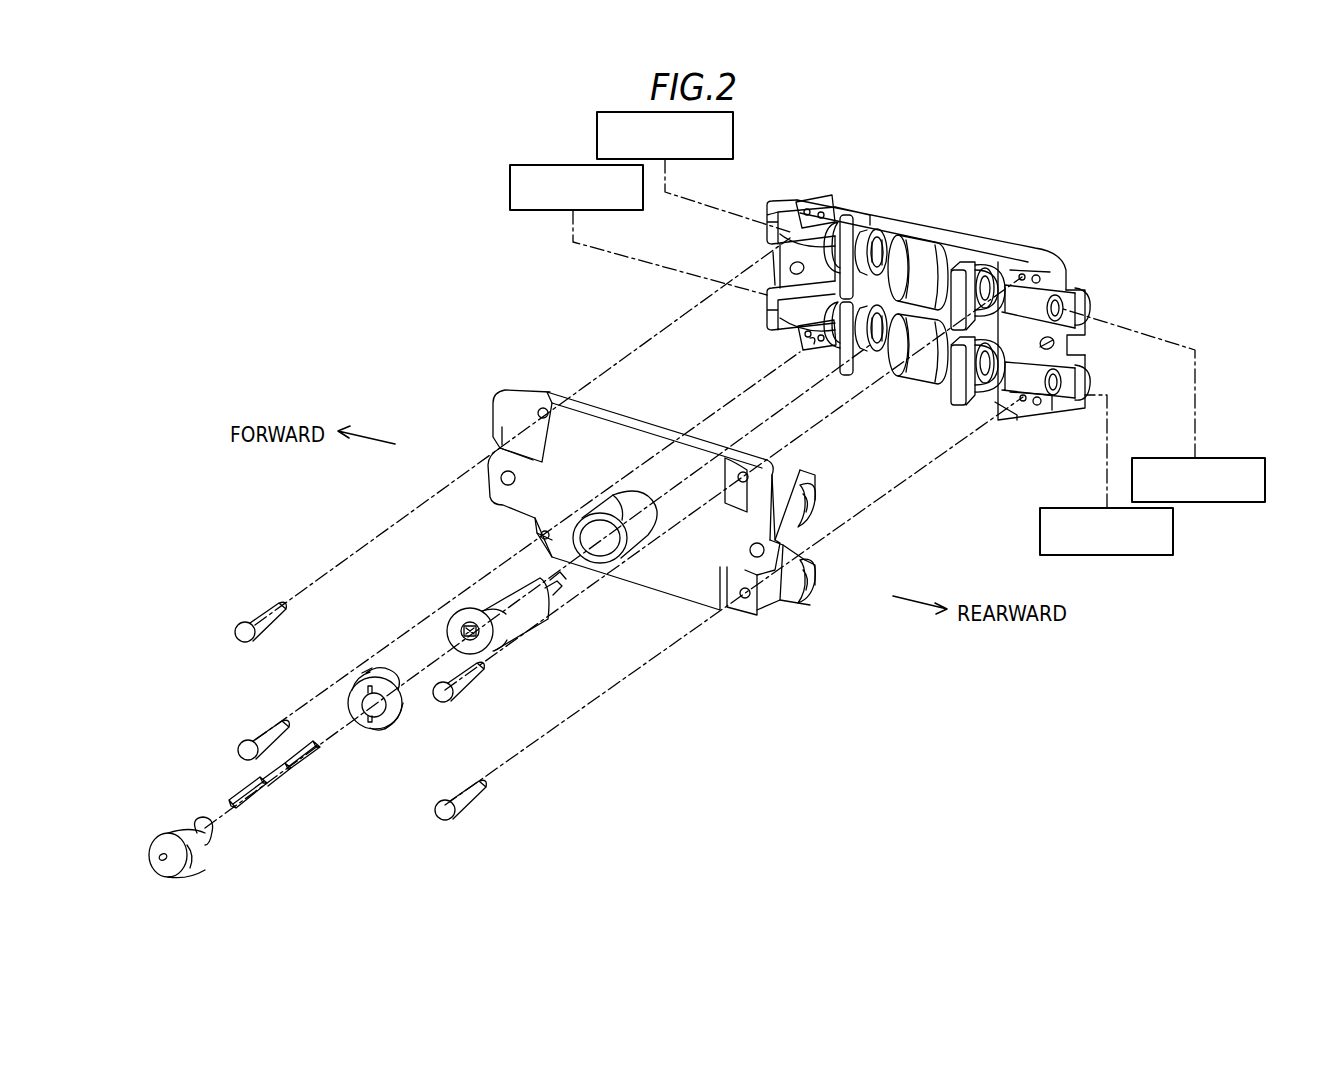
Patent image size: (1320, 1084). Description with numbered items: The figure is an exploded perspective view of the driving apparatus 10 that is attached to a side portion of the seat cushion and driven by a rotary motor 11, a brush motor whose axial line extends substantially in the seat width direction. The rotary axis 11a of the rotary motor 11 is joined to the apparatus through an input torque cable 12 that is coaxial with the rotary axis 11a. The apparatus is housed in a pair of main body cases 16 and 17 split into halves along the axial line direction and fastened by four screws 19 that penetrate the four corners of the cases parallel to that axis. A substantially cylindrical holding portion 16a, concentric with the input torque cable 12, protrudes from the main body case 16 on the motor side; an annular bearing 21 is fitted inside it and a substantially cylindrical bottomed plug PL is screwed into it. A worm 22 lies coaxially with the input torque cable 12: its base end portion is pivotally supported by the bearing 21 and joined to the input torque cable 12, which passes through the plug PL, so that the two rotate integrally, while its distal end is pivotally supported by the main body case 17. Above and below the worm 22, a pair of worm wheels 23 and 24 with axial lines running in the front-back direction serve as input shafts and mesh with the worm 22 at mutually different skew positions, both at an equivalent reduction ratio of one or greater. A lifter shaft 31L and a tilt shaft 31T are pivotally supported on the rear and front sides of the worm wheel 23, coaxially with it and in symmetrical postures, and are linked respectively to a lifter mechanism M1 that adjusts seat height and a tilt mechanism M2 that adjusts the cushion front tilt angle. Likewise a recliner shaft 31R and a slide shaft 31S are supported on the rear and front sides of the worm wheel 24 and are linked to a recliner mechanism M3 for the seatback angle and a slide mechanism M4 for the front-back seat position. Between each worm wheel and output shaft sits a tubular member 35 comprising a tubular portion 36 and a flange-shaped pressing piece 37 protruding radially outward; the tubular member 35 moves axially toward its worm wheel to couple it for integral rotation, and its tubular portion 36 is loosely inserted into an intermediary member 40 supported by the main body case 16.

The driving apparatus 10 is at (604, 333).
The rotary motor 11 is at (195, 860).
The rotary axis 11a is at (208, 838).
The input torque cable 12 is at (286, 773).
The main body case 16 is at (643, 570).
The holding portion 16a is at (608, 503).
The main body case 17 is at (822, 192).
The screws 19 is at (267, 730).
The annular bearing 21 is at (478, 603).
The worm 22 is at (523, 606).
The worm wheel 23 is at (915, 245).
The worm wheel 24 is at (906, 368).
The tilt shaft 31T is at (790, 232).
The slide shaft 31S is at (780, 312).
The lifter shaft 31L is at (1030, 298).
The recliner shaft 31R is at (1040, 405).
The tubular member 35 is at (868, 232).
The tubular portion 36 is at (878, 228).
The pressing piece 37 is at (844, 216).
The intermediary member 40 is at (800, 244).
The plug PL is at (402, 713).
The lifter mechanism M1 is at (1228, 457).
The tilt mechanism M2 is at (597, 134).
The recliner mechanism M3 is at (1173, 527).
The slide mechanism M4 is at (510, 186).